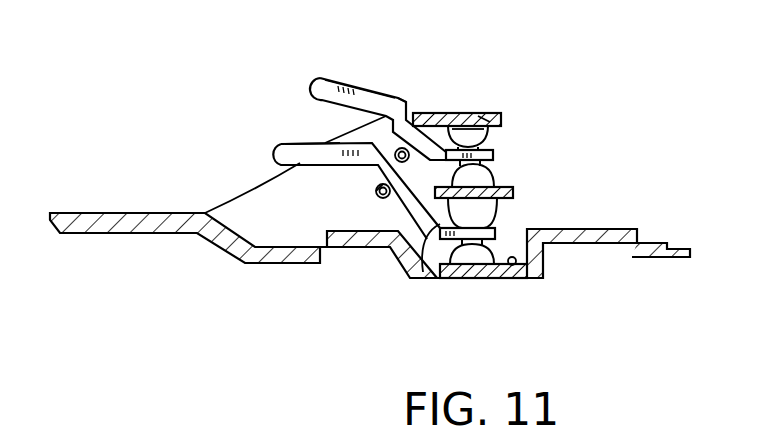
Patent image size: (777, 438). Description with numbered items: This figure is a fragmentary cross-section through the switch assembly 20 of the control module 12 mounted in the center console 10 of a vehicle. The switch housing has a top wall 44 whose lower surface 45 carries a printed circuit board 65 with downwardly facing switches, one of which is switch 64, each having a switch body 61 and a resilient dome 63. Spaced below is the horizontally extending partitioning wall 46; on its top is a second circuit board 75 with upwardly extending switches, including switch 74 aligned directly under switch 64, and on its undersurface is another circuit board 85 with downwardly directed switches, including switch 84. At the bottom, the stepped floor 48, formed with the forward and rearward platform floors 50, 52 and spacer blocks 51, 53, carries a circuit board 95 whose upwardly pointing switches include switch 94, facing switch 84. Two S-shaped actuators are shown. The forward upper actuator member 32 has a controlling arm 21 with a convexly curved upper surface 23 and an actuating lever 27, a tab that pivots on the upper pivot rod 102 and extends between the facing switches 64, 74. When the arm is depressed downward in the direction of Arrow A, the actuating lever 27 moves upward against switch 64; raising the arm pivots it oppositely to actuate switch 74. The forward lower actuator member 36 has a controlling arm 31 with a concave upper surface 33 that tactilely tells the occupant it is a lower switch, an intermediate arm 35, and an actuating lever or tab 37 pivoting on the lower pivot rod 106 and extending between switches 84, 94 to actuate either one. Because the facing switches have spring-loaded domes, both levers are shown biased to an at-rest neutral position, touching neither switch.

The center console 10 is at (85, 211).
The control module 12 is at (204, 211).
The switch assembly 20 is at (330, 78).
The controlling arm 21 is at (320, 97).
The convexly curved upper surface 23 is at (363, 92).
The actuating lever 27 is at (458, 118).
The controlling arm 31 is at (272, 165).
The forward upper actuator member 32 is at (425, 73).
The concave upper surface 33 is at (282, 143).
The intermediate arm 35 is at (382, 199).
The forward lower actuator member 36 is at (260, 146).
The actuating lever or tab 37 is at (541, 247).
The top wall 44 is at (492, 118).
The lower surface 45 is at (496, 130).
The partitioning wall 46 is at (508, 183).
The floor 48 is at (461, 280).
The forward platform floor 50 is at (612, 244).
The spacer block 51 is at (545, 244).
The rearward platform floor 52 is at (335, 258).
The spacer block 53 is at (395, 257).
The switch body 61 is at (494, 142).
The resilient dome 63 is at (418, 166).
The switch 64 is at (482, 121).
The printed circuit board 65 is at (428, 123).
The switch 74 is at (504, 173).
The second circuit board 75 is at (505, 177).
The switch 84 is at (500, 216).
The circuit board 85 is at (466, 286).
The switch 94 is at (511, 268).
The circuit board 95 is at (516, 266).
The upper pivot rod 102 is at (345, 126).
The lower pivot rod 106 is at (376, 190).
The Arrow A is at (362, 58).